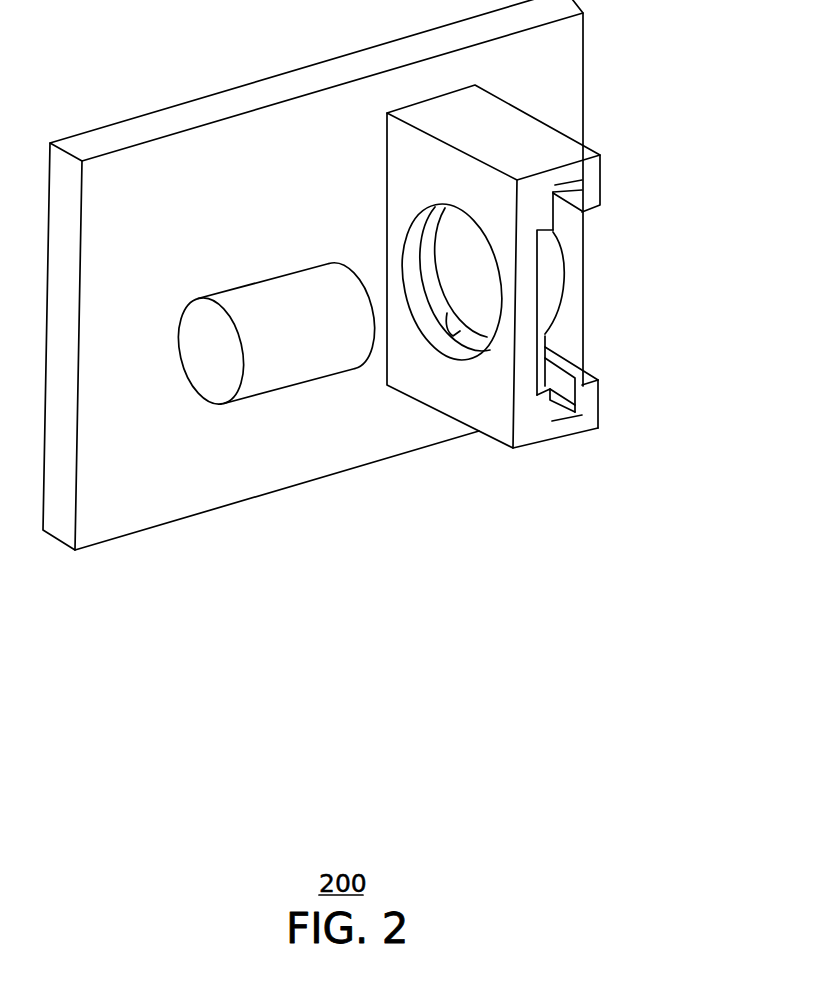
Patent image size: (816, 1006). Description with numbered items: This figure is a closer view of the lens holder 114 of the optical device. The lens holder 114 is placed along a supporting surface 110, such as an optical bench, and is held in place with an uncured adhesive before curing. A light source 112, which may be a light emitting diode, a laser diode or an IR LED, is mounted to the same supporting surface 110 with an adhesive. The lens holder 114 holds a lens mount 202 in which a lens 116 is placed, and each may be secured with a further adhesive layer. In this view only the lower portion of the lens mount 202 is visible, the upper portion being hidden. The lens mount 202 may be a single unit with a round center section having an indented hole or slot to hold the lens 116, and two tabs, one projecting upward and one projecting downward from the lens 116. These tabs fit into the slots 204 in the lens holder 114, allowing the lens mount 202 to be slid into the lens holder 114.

The supporting surface 110 is at (287, 490).
The light source 112 is at (245, 285).
The lens holder 114 is at (602, 173).
The lens 116 is at (563, 275).
The lens mount 202 is at (546, 345).
The slots 204 is at (557, 183).